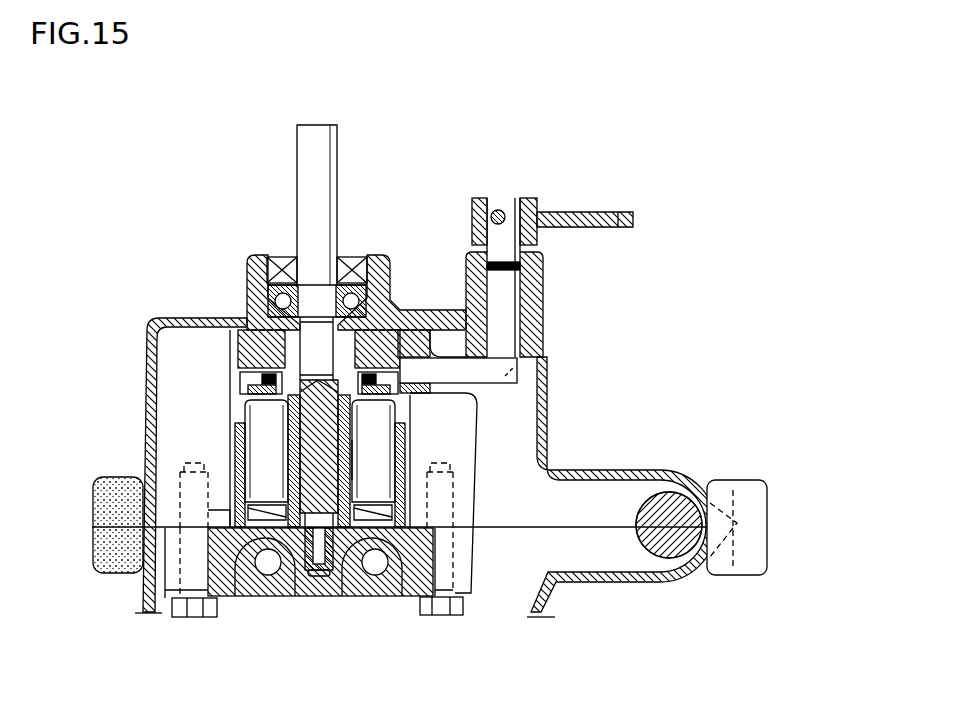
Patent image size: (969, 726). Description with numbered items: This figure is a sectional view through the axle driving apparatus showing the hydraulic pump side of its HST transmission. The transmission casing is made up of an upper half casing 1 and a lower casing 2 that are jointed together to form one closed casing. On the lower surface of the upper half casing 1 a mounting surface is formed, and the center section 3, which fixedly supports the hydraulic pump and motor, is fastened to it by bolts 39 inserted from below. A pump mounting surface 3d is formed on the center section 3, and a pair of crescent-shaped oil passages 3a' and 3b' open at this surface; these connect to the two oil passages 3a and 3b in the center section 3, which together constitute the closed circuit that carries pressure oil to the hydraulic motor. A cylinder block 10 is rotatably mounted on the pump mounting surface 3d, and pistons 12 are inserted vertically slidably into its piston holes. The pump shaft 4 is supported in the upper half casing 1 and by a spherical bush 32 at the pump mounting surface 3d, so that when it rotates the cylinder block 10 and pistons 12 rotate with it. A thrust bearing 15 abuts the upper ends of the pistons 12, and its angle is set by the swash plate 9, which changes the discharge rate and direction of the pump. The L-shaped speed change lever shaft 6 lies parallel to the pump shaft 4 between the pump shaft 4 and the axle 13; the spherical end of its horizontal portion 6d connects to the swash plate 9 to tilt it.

The upper half casing 1 is at (150, 326).
The lower casing 2 is at (670, 582).
The center section 3 is at (322, 597).
The oil passage 3a is at (383, 602).
The crescent-shaped oil passage 3a' is at (372, 616).
The oil passage 3b is at (263, 600).
The crescent-shaped oil passage 3b' is at (262, 615).
The pump mounting surface 3d is at (230, 510).
The pump shaft 4 is at (337, 163).
The speed change lever shaft 6 is at (510, 298).
The horizontal portion 6d is at (508, 383).
The swash plate 9 is at (238, 350).
The cylinder block 10 is at (237, 442).
The piston 12 is at (368, 460).
The axle 13 is at (638, 515).
The thrust bearing 15 is at (240, 392).
The spherical bush 32 is at (297, 596).
The bolt 39 is at (191, 618).